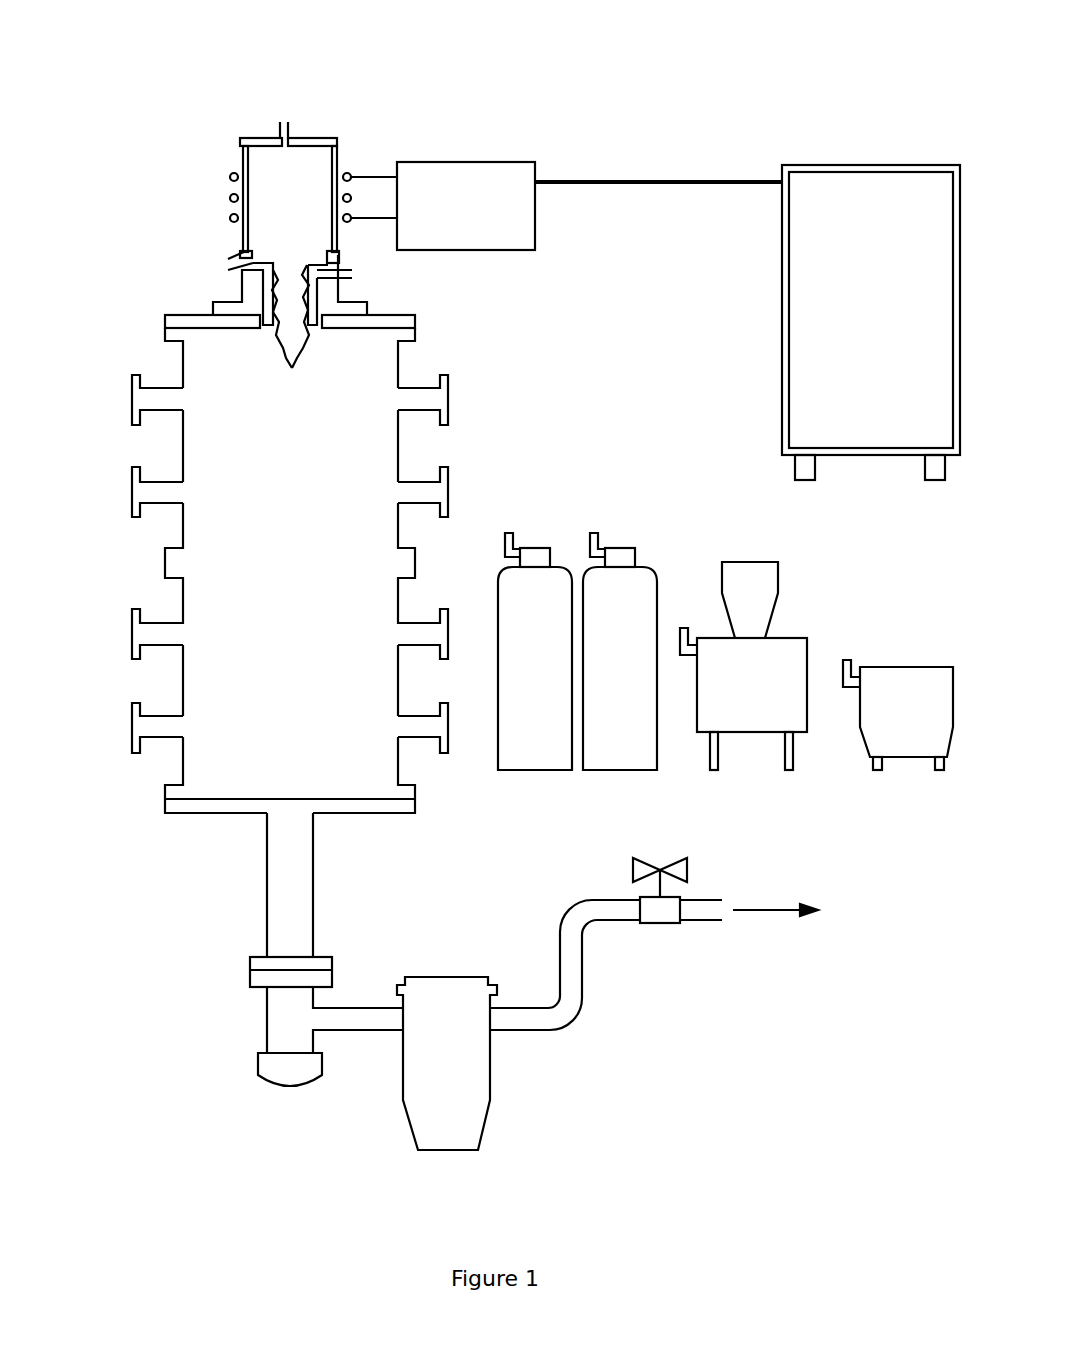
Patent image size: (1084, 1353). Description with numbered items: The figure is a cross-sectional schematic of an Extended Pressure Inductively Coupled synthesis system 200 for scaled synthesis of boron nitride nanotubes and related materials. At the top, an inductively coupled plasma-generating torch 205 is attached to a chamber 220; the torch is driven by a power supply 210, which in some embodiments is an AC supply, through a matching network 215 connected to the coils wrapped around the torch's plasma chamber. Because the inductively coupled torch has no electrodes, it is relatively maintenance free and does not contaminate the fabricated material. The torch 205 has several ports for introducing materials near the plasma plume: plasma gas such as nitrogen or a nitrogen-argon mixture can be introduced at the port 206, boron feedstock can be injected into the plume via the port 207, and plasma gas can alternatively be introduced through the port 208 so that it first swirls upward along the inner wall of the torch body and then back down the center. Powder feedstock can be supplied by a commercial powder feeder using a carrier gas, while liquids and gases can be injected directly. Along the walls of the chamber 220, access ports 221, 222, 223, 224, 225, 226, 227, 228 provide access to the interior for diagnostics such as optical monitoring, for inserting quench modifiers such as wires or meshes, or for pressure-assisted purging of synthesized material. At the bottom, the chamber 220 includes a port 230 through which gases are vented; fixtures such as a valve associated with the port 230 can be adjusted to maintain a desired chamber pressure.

The Extended Pressure Inductively Coupled (EPIC) synthesis system 200 is at (843, 57).
The inductively coupled plasma-generating torch 205 is at (308, 134).
The port 206 is at (283, 101).
The port 207 is at (368, 272).
The port 208 is at (216, 260).
The power supply 210 is at (845, 165).
The matching network 215 is at (452, 162).
The chamber 220 is at (400, 372).
The access port 221 is at (132, 400).
The access port 222 is at (448, 400).
The access port 223 is at (132, 493).
The access port 224 is at (448, 493).
The access port 225 is at (132, 635).
The access port 226 is at (448, 632).
The access port 227 is at (132, 732).
The access port 228 is at (448, 733).
The port 230 is at (293, 800).